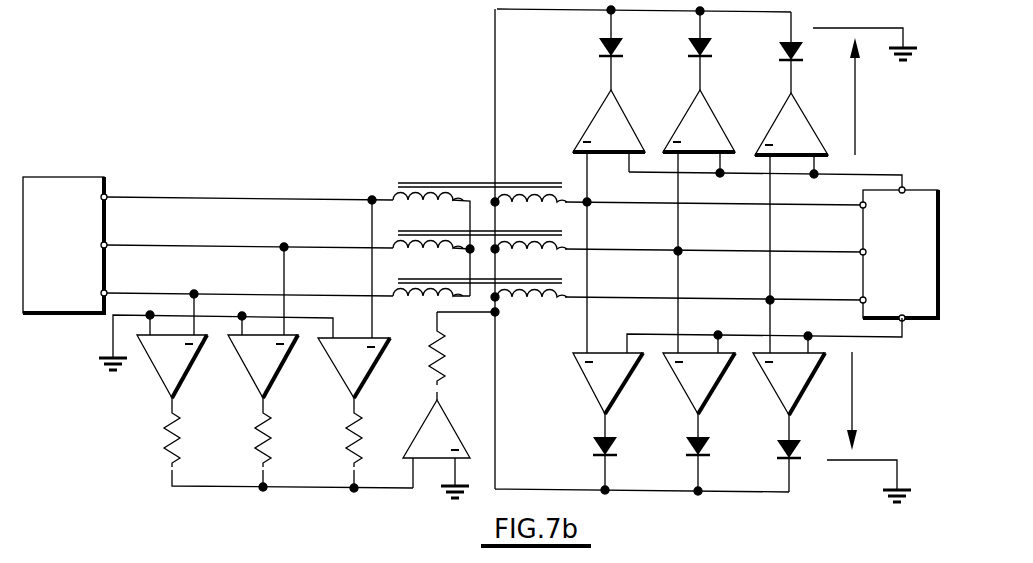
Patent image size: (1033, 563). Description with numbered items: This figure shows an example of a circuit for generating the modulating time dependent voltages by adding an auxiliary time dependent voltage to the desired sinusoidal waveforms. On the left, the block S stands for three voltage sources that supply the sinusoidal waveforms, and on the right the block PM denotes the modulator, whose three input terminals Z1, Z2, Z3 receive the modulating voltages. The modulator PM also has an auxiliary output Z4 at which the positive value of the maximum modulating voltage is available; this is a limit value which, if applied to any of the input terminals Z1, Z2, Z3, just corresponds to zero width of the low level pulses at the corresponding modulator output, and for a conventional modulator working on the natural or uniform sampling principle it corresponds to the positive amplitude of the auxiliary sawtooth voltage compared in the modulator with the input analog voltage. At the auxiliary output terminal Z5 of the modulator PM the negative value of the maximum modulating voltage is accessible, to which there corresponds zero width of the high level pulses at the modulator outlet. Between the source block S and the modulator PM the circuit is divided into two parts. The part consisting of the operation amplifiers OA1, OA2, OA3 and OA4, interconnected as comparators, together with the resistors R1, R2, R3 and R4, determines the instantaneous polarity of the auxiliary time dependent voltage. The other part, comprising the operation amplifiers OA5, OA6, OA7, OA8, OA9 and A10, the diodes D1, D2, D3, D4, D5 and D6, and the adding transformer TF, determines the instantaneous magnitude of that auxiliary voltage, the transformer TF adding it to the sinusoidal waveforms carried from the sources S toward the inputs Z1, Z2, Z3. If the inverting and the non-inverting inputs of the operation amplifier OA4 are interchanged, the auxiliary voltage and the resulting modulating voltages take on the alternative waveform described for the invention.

The block of voltage sources S is at (65, 245).
The adding transformer TF is at (480, 200).
The modulator PM is at (900, 254).
The operation amplifier OA1 is at (212, 365).
The operation amplifier OA2 is at (303, 365).
The operation amplifier OA3 is at (394, 368).
The operation amplifier OA4 is at (430, 418).
The operation amplifier OA5 is at (594, 110).
The operation amplifier OA6 is at (682, 110).
The operation amplifier OA7 is at (778, 113).
The operation amplifier OA8 is at (590, 383).
The operation amplifier OA9 is at (685, 386).
The operation amplifier A10 is at (774, 383).
The resistor R1 is at (163, 446).
The resistor R2 is at (254, 446).
The resistor R3 is at (345, 446).
The resistor R4 is at (448, 354).
The diode D1 is at (601, 41).
The diode D2 is at (689, 41).
The diode D3 is at (779, 44).
The diode D4 is at (592, 443).
The diode D5 is at (684, 443).
The diode D6 is at (774, 446).
The input terminal of the modulator Z1 is at (861, 209).
The input terminal of the modulator Z2 is at (861, 254).
The input terminal of the modulator Z3 is at (860, 302).
The auxiliary output of the modulator Z4 is at (902, 188).
The auxiliary output terminal of the modulator Z5 is at (905, 321).